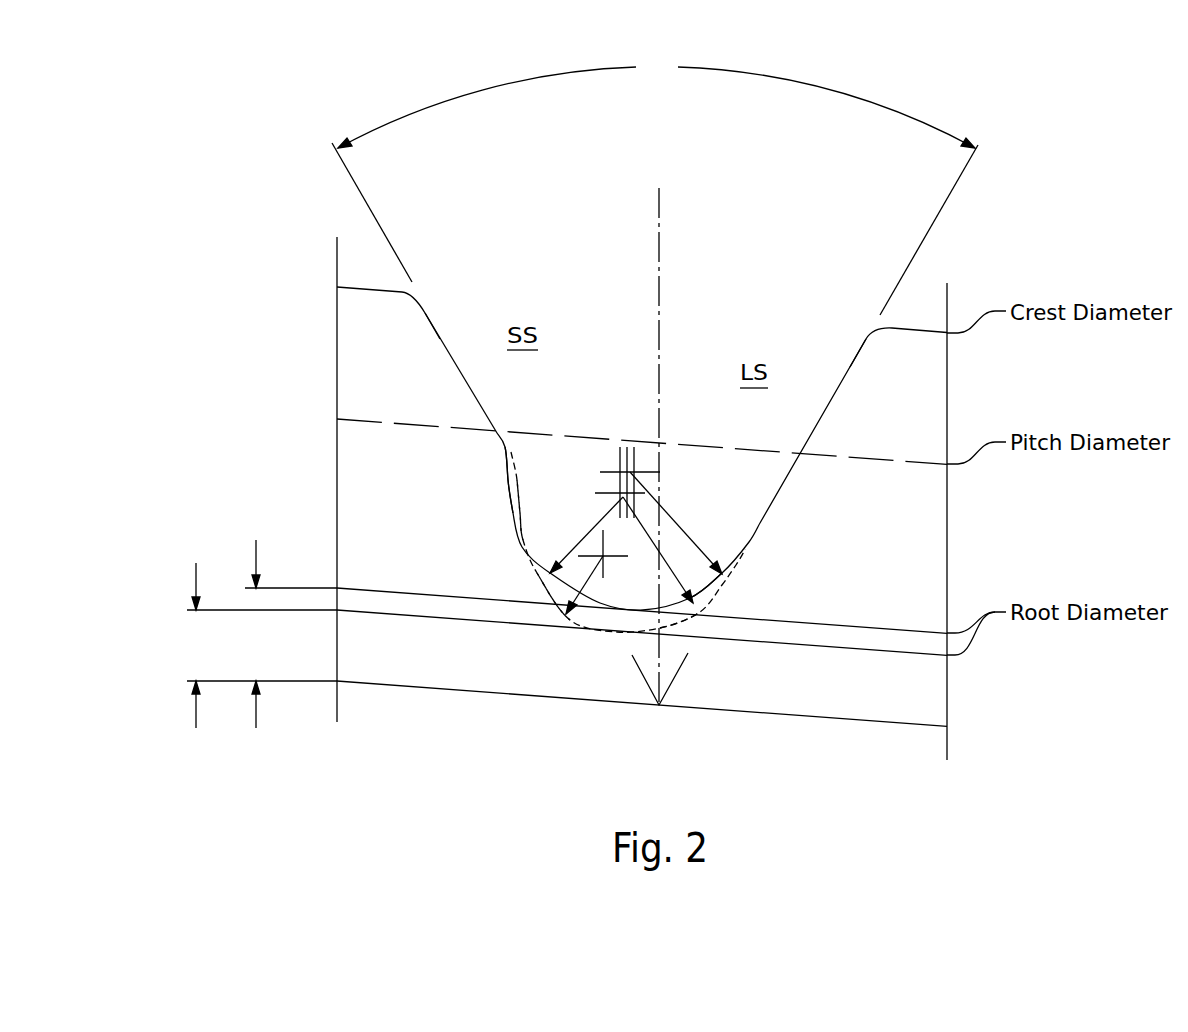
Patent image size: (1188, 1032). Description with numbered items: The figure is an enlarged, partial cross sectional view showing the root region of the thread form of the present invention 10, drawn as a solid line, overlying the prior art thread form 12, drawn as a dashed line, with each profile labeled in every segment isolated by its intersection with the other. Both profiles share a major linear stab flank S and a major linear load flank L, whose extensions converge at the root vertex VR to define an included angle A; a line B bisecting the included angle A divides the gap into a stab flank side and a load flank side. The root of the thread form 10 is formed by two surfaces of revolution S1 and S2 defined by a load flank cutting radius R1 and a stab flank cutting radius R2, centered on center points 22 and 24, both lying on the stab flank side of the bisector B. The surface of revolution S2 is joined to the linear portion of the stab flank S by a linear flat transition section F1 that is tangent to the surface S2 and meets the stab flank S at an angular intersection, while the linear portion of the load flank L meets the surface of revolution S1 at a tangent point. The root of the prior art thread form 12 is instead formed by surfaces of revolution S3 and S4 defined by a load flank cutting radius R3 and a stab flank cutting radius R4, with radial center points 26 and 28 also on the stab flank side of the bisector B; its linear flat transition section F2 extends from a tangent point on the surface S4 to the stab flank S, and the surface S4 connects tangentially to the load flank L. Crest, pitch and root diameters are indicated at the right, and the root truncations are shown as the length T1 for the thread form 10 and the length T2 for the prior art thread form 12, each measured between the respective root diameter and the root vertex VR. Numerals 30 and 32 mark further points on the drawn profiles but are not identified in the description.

The thread form of the present invention 10 is at (514, 526).
The prior art thread form 12 is at (513, 453).
The center point 22 is at (640, 467).
The center point 24 is at (650, 478).
The radial center point 26 is at (610, 493).
The radial center point 28 is at (608, 560).
The stab flank 30 is at (500, 447).
The flank-to-root transition 32 is at (506, 462).
The stab flank S is at (436, 316).
The load flank L is at (850, 340).
The bisector line B is at (660, 203).
The included angle A is at (656, 103).
The load flank cutting radius R1 is at (668, 512).
The stab flank cutting radius R2 is at (587, 537).
The load flank cutting radius R3 is at (650, 536).
The stab flank cutting radius R4 is at (580, 586).
The surface of revolution S1 is at (719, 578).
The surface of revolution S2 is at (520, 540).
The surface of revolution S3 is at (702, 604).
The surface of revolution S4 is at (568, 621).
The linear flat transition section F1 is at (511, 507).
The linear flat transition section F2 is at (518, 485).
The root truncation T1 is at (254, 634).
The root truncation T2 is at (196, 645).
The root vertex VR is at (659, 705).